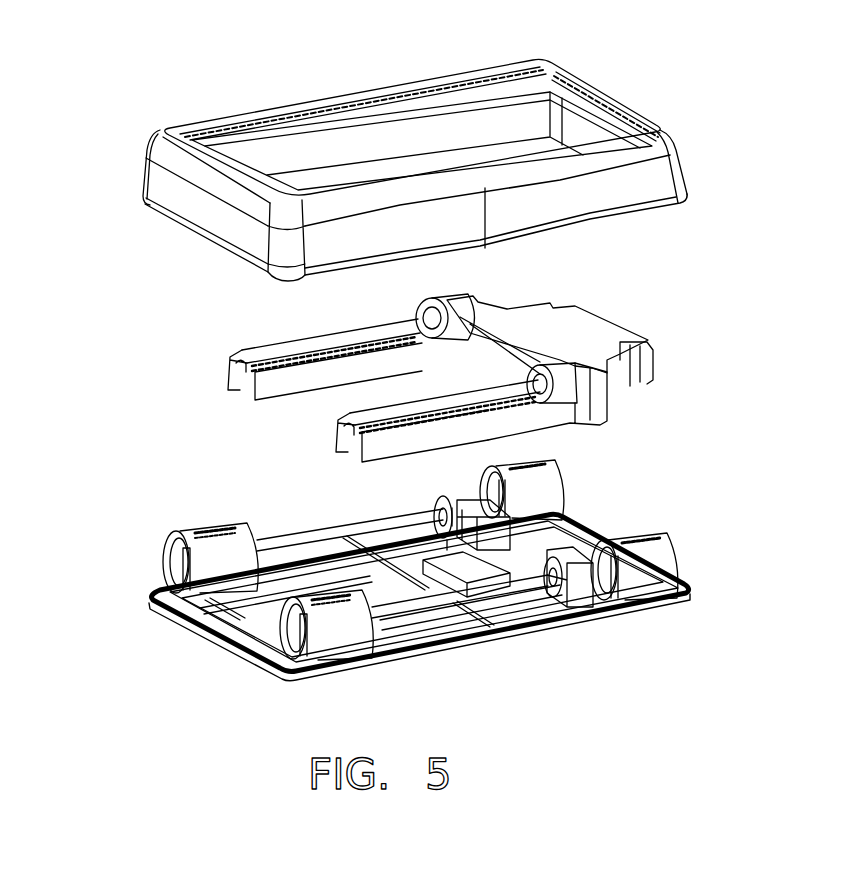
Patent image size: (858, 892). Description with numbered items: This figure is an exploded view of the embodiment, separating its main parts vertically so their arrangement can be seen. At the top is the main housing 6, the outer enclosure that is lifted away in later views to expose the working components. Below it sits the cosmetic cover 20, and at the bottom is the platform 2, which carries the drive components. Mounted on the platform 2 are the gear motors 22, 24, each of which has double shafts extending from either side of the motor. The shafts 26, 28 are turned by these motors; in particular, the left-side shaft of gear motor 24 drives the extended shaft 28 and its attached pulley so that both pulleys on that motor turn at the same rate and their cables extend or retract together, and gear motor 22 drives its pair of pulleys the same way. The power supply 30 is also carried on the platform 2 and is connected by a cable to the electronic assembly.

The platform 2 is at (233, 603).
The main housing 6 is at (660, 181).
The cosmetic cover 20 is at (587, 338).
The gear motor 22 is at (503, 530).
The gear motor 24 is at (583, 580).
The shaft 26 is at (317, 538).
The extended shaft 28 is at (410, 610).
The power supply 30 is at (462, 555).